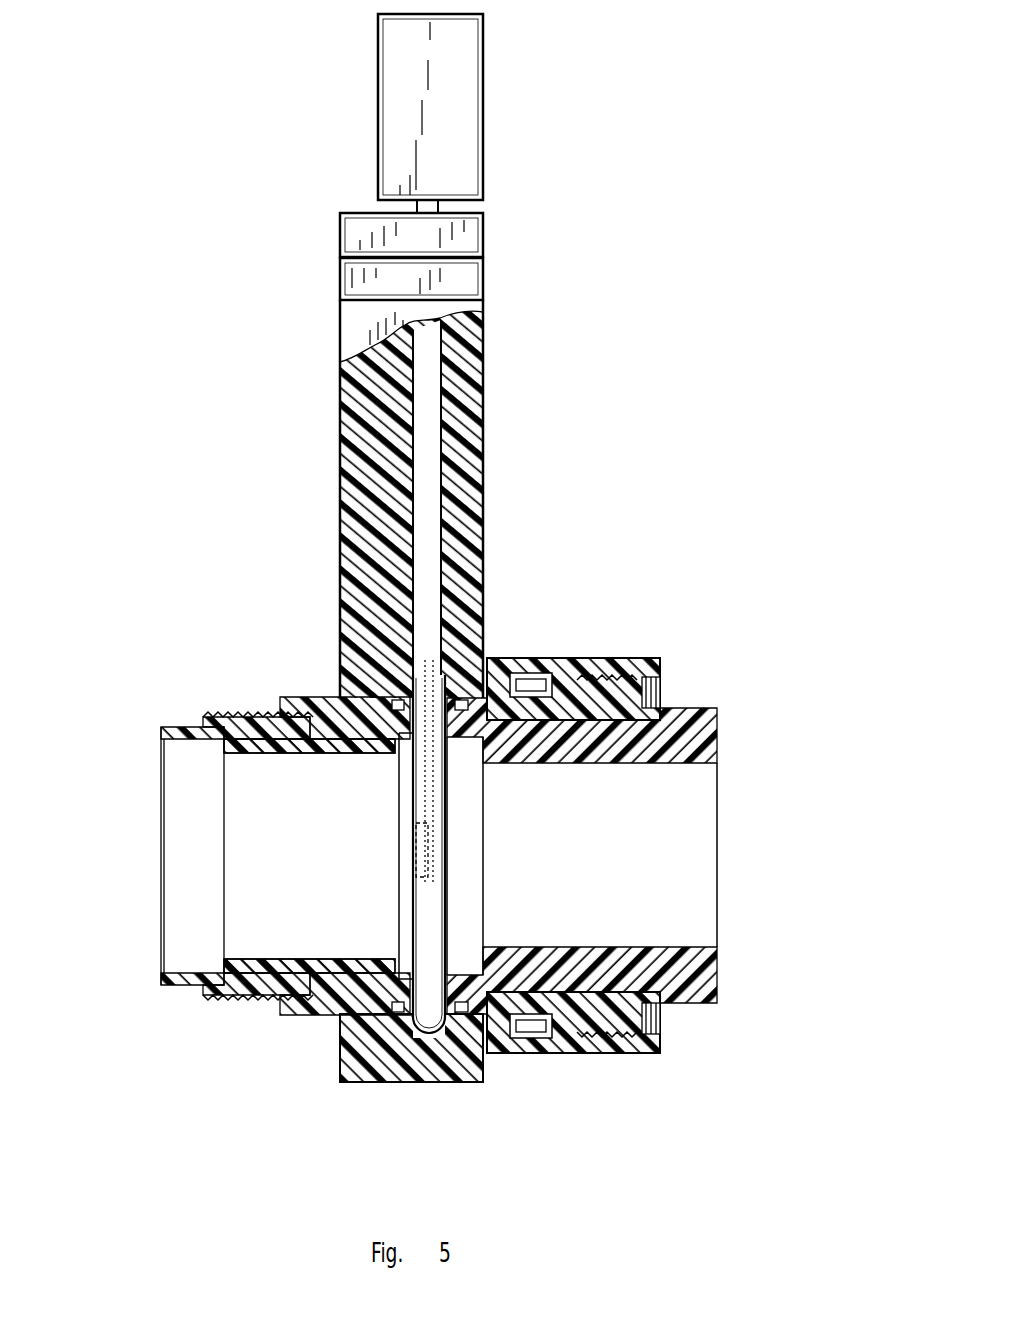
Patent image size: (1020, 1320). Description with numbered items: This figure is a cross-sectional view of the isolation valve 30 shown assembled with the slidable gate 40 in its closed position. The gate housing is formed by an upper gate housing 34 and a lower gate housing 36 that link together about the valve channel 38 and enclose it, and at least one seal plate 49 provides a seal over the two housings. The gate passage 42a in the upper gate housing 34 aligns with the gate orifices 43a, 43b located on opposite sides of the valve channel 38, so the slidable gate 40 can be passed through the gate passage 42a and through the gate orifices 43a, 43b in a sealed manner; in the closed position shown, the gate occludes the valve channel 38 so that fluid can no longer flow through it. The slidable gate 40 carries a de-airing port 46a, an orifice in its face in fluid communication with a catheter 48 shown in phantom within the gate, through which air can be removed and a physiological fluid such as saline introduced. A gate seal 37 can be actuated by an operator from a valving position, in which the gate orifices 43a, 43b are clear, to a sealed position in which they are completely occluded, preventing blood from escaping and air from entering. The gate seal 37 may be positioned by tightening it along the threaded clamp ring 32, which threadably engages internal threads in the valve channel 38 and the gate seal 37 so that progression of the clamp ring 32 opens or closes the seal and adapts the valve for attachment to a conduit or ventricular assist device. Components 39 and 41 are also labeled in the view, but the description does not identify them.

The isolation valve 30 is at (694, 440).
The clamp ring 32 is at (187, 727).
The upper gate housing 34 is at (472, 399).
The lower gate housing 36 is at (405, 1082).
The gate seal 37 is at (322, 720).
The valve channel 38 is at (513, 663).
The coupling nut 39 is at (572, 663).
The slidable gate 40 is at (442, 846).
The second pipe section body 41 is at (690, 708).
The gate passage 42a is at (430, 346).
The gate orifice 43a is at (433, 712).
The gate orifice 43b is at (431, 1031).
The de-airing port 46a is at (413, 872).
The catheter 48 is at (414, 210).
The seal plate 49 is at (510, 7).